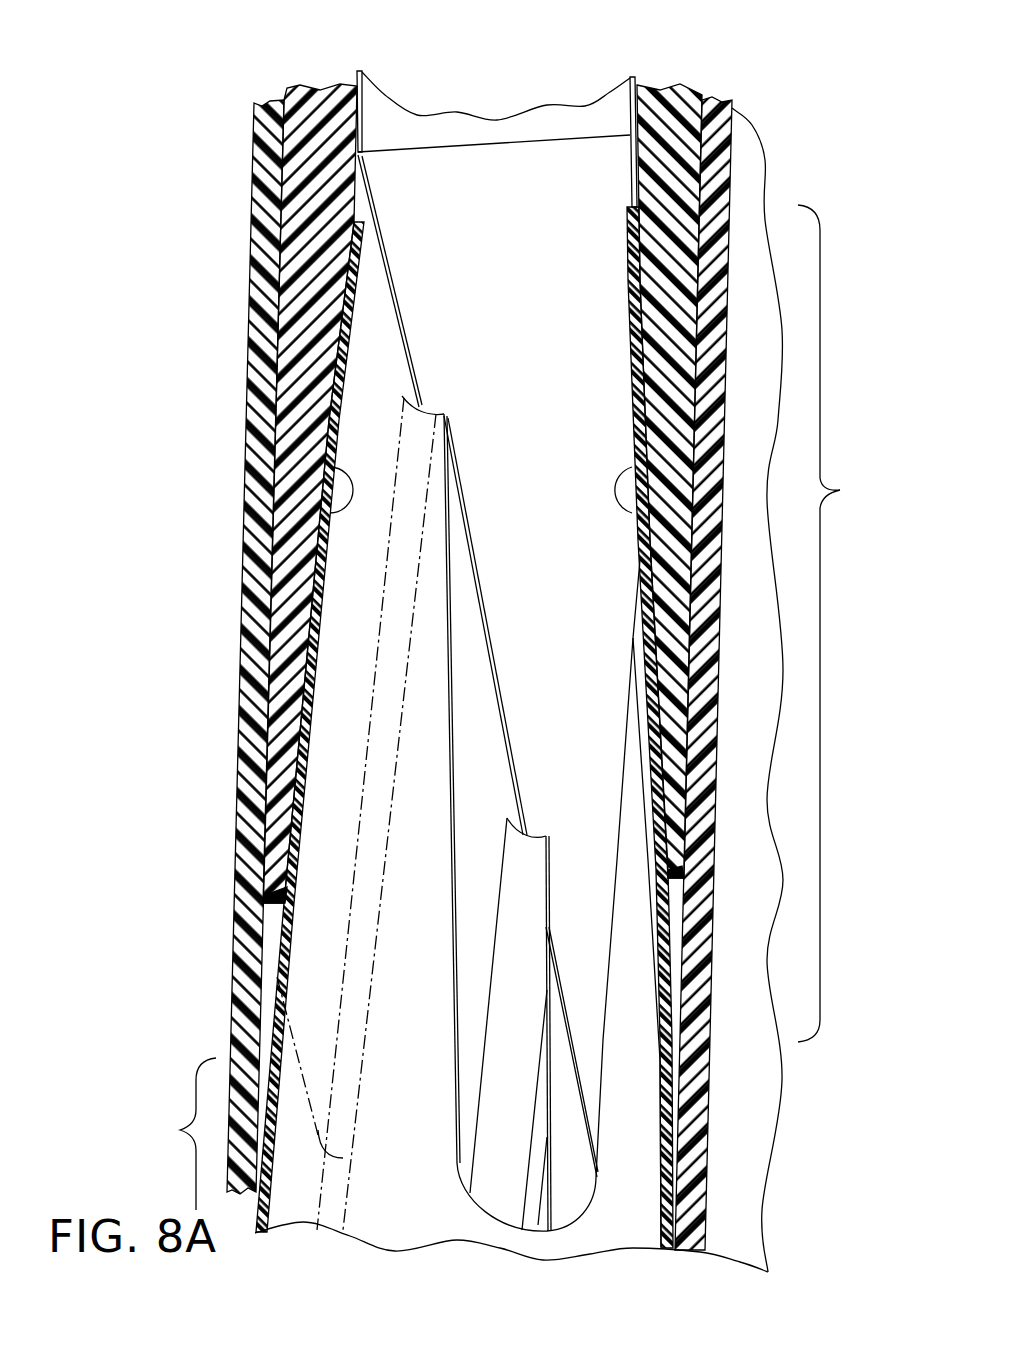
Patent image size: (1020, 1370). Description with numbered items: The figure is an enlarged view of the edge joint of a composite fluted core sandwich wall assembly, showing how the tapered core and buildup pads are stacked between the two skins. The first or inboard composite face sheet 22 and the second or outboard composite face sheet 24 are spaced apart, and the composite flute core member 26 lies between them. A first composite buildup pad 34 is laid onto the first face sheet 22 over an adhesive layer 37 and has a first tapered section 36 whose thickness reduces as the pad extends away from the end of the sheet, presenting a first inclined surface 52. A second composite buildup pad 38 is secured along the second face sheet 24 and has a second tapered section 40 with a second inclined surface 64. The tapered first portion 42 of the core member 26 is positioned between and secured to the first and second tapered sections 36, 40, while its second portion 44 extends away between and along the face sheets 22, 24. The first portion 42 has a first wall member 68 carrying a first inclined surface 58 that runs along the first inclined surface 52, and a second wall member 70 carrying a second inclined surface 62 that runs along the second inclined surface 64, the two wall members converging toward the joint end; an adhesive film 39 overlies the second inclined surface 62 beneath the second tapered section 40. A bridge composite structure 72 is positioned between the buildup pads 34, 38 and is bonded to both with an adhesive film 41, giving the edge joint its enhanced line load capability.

The first composite face sheet 22 is at (452, 643).
The second composite face sheet 24 is at (673, 662).
The composite flute core member 26 is at (469, 701).
The first composite buildup pad 34 is at (323, 118).
The first tapered section 36 is at (305, 373).
The adhesive layer 37 is at (270, 113).
The second composite buildup pad 38 is at (700, 102).
The adhesive film 39 is at (627, 256).
The second tapered section 40 is at (673, 330).
The adhesive film 41 is at (357, 83).
The first portion 42 is at (840, 490).
The second portion 44 is at (180, 1128).
The first inclined surface 52 is at (327, 515).
The first inclined surface 58 is at (285, 630).
The second inclined surface 62 is at (637, 357).
The second inclined surface 64 is at (680, 527).
The first wall member 68 is at (343, 363).
The second wall member 70 is at (630, 385).
The bridge composite structure 72 is at (500, 128).